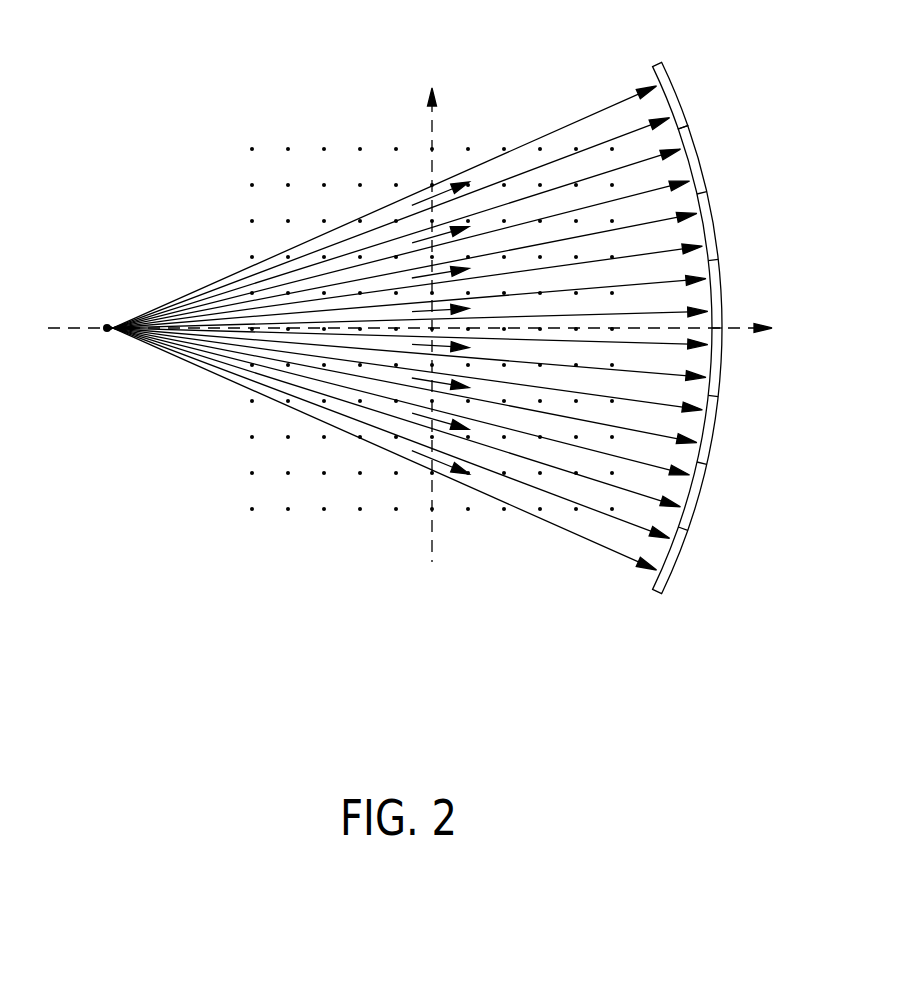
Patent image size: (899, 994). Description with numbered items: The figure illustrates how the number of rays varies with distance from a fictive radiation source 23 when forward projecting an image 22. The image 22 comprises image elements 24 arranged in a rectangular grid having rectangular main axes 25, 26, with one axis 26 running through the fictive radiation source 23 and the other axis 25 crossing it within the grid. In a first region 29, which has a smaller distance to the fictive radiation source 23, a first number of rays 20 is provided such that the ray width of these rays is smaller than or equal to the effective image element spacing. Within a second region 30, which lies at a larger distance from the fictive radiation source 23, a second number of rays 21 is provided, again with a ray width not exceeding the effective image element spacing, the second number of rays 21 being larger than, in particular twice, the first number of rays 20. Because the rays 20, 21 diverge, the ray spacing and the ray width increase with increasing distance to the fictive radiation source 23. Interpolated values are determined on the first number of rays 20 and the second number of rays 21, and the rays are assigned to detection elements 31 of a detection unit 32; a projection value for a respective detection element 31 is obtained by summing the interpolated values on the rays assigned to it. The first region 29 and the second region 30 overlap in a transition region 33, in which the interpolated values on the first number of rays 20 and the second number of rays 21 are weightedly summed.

The first number of rays 20 is at (406, 448).
The second number of rays 21 is at (381, 176).
The image 22 is at (432, 192).
The fictive radiation source 23 is at (107, 322).
The image elements 24 is at (425, 487).
The rectangular main axis 25 is at (432, 527).
The rectangular main axis 26 is at (67, 327).
The first region 29 is at (407, 223).
The second region 30 is at (394, 176).
The detection element 31 is at (695, 72).
The detection unit 32 is at (723, 360).
The transition region 33 is at (416, 284).